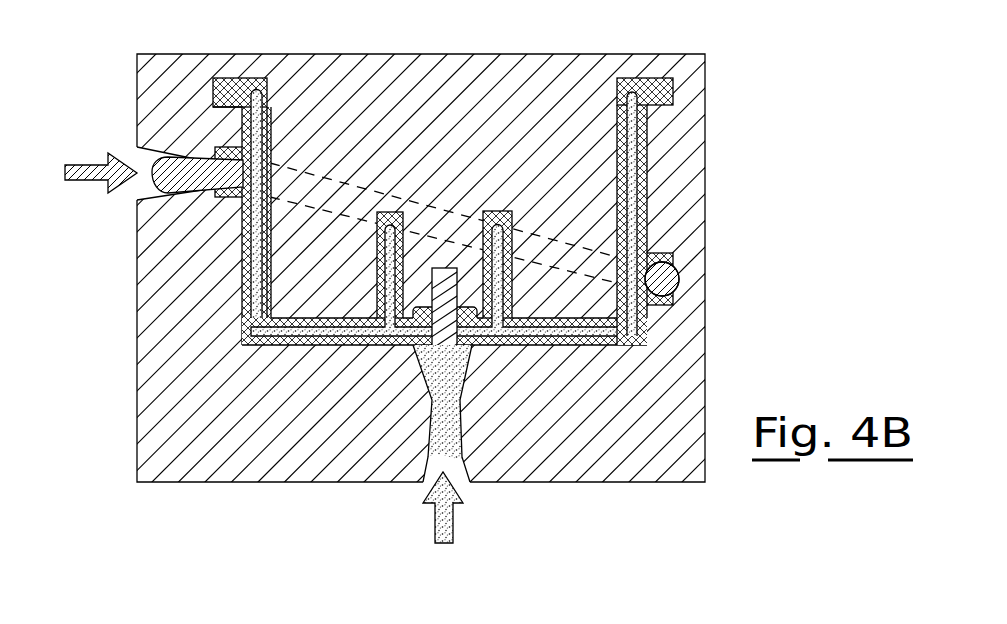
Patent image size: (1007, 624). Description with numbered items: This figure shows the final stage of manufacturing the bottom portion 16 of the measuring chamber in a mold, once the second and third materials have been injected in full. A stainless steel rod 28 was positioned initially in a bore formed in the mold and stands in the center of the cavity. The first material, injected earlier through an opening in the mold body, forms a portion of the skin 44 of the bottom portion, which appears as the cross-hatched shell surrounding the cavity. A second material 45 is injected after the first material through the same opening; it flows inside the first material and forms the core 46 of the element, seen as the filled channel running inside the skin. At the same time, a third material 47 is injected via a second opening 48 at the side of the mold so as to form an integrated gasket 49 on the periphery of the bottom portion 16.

The bottom portion 16 is at (240, 285).
The stainless steel rod 28 is at (452, 358).
The skin 44 is at (244, 348).
The second material 45 is at (430, 388).
The core 46 is at (644, 176).
The third material 47 is at (172, 178).
The second opening 48 is at (125, 195).
The integrated gasket 49 is at (666, 280).